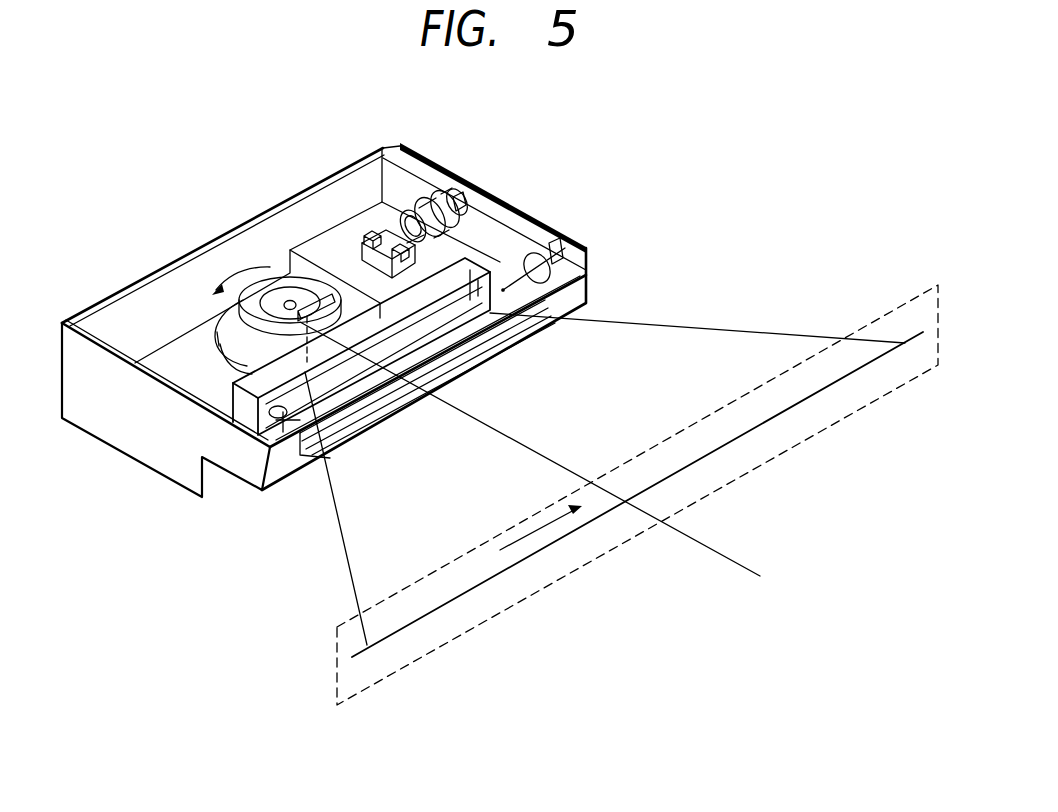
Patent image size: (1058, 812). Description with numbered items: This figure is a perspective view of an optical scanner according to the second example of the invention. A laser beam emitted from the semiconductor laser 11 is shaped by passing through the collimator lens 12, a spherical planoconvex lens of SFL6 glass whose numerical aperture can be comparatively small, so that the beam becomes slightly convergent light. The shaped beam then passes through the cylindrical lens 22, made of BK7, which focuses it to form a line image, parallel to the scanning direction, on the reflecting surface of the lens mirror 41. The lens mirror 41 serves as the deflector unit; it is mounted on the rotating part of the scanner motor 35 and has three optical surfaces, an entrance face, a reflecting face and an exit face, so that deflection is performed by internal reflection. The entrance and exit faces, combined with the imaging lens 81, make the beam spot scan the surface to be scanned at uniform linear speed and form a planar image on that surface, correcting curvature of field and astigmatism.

The semiconductor laser 11 is at (460, 203).
The collimator lens 12 is at (412, 237).
The cylindrical lens 22 is at (380, 234).
The scanner motor 35 is at (215, 345).
The lens mirror 41 is at (286, 293).
The imaging lens 81 is at (363, 367).